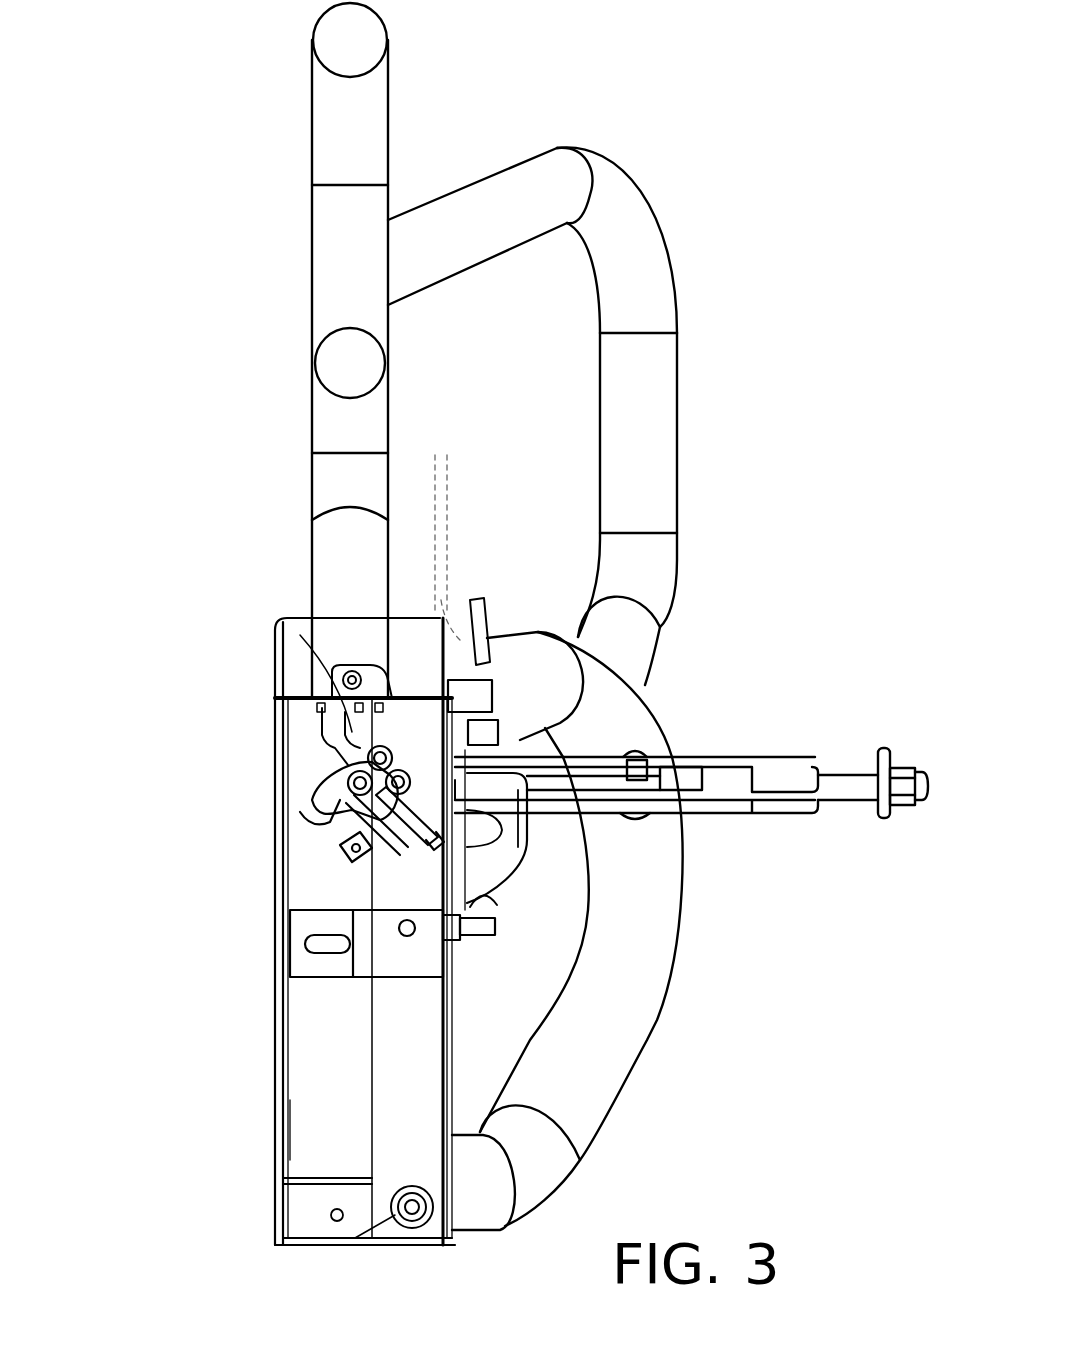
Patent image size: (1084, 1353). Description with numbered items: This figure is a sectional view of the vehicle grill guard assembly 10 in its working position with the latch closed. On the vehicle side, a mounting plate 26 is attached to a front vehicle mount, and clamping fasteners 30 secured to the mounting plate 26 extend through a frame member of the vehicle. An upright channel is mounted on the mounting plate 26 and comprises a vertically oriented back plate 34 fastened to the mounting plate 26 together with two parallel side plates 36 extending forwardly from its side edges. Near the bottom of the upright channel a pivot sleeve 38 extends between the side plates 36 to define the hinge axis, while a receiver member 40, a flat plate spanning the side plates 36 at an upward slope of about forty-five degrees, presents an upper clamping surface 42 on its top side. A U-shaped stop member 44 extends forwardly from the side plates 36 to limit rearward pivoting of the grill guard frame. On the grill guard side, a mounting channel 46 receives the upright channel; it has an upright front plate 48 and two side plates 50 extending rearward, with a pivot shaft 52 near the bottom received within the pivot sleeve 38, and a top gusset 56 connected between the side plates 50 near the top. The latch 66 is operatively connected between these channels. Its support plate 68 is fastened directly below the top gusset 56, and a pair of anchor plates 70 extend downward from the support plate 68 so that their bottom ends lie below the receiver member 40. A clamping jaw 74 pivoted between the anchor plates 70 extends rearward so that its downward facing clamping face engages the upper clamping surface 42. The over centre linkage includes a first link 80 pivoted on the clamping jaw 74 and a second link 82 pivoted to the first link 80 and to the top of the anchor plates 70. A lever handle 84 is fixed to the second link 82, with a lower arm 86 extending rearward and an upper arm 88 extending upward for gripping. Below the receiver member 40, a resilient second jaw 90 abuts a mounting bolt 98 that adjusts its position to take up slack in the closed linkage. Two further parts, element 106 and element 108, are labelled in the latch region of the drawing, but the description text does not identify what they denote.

The vehicle grill guard assembly 10 is at (712, 80).
The mounting plates 26 is at (463, 885).
The clamping fasteners 30 is at (833, 783).
The back plate 34 is at (448, 1042).
The side plates 36 is at (403, 1047).
The pivot sleeves 38 is at (413, 1225).
The receiver members 40 is at (460, 852).
The upper clamping surface 42 is at (522, 843).
The stop member 44 is at (330, 965).
The mounting channels 46 is at (276, 1118).
The front plate 48 is at (300, 1150).
The side plates 50 is at (330, 1140).
The pivot shafts 52 is at (403, 1210).
The top gusset 56 is at (323, 693).
The latches 66 is at (316, 741).
The support plate 68 is at (357, 664).
The anchor plates 70 is at (300, 635).
The clamping jaw 74 is at (523, 813).
The first link 80 is at (465, 757).
The second link 82 is at (468, 721).
The lever handle 84 is at (440, 457).
The lower arm 86 is at (470, 620).
The upper arm 88 is at (443, 502).
The second jaw 90 is at (372, 822).
The mounting bolt 98 is at (355, 855).
The cam 106 is at (335, 812).
The pawl 108 is at (330, 790).